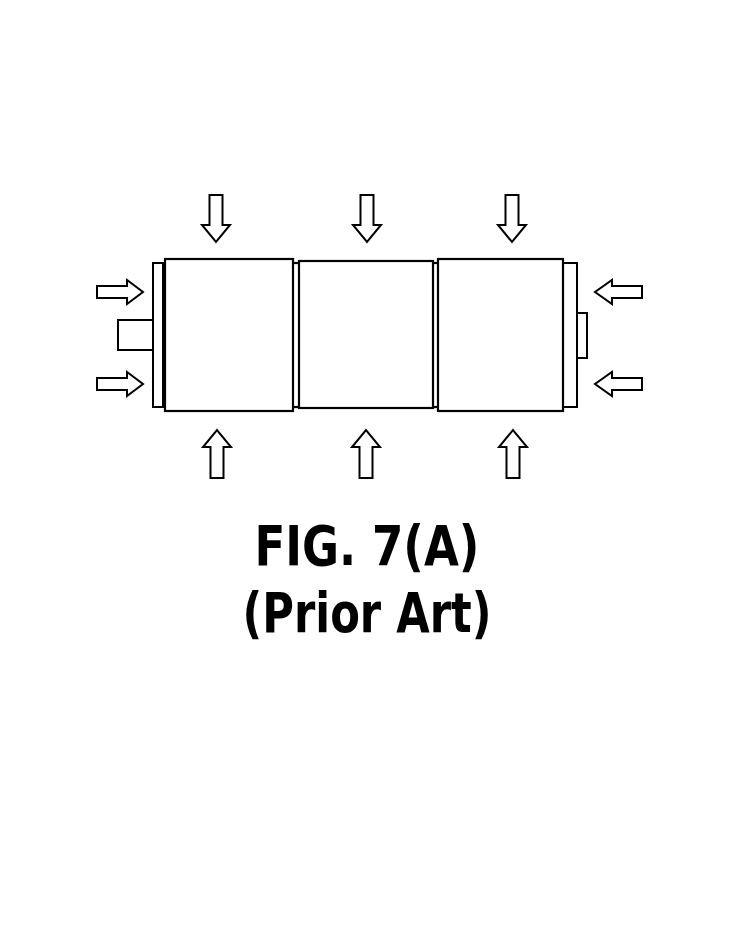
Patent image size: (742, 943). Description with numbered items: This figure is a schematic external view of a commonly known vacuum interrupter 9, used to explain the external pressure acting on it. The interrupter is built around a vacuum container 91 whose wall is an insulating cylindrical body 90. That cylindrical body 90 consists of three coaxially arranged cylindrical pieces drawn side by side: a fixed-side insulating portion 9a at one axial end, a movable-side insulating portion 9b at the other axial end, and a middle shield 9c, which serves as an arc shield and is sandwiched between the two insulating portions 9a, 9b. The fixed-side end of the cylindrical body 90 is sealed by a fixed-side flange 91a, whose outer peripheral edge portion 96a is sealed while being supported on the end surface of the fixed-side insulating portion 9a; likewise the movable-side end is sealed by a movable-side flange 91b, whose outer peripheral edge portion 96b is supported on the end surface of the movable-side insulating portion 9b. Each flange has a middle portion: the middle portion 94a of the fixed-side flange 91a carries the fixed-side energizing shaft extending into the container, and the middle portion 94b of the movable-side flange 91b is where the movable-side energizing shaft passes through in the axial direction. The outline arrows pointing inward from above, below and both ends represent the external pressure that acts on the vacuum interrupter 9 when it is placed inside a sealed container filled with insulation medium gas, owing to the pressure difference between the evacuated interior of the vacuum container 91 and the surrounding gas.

The vacuum interrupter 9 is at (162, 440).
The insulating cylindrical body 90 is at (468, 80).
The fixed-side insulating portion 9a is at (272, 258).
The movable-side insulating portion 9b is at (462, 258).
The middle shield 9c is at (398, 258).
The vacuum container 91 is at (152, 247).
The fixed-side flange 91a is at (570, 400).
The movable-side flange 91b is at (158, 402).
The middle portion of the fixed-side flange 94a is at (570, 335).
The middle portion of the movable-side flange 94b is at (160, 333).
The outer peripheral edge portion of the fixed-side flange 96a is at (572, 267).
The outer peripheral edge portion of the movable-side flange 96b is at (160, 272).